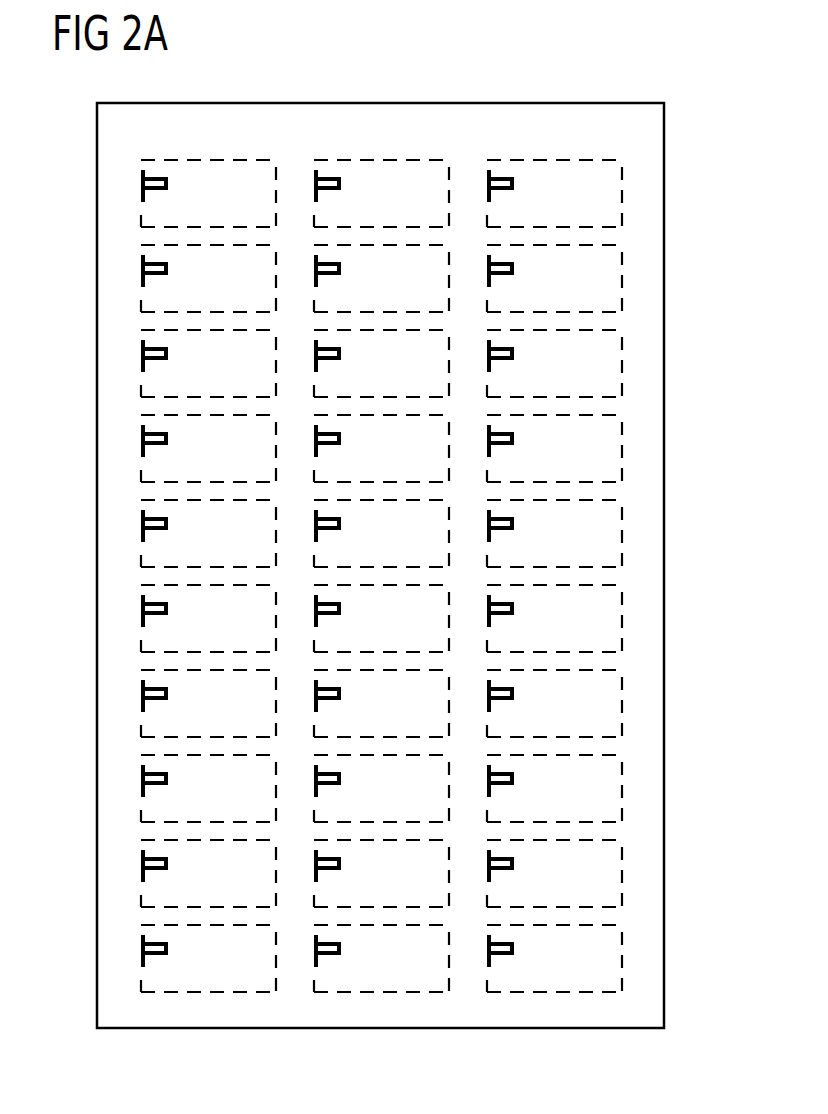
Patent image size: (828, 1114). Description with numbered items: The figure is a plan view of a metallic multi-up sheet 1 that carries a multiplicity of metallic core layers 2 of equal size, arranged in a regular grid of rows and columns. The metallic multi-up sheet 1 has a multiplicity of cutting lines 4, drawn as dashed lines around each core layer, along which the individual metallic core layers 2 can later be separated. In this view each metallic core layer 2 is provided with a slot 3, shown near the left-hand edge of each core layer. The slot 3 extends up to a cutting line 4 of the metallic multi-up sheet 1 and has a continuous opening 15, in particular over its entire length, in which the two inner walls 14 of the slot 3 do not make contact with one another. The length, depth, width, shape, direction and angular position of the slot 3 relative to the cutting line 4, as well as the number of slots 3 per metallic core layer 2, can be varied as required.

The metallic multi-up sheet 1 is at (382, 113).
The metallic core layer 2 is at (155, 208).
The slot 3 is at (153, 158).
The cutting line 4 is at (150, 328).
The inner wall 14 is at (155, 946).
The continuous opening 15 is at (141, 864).